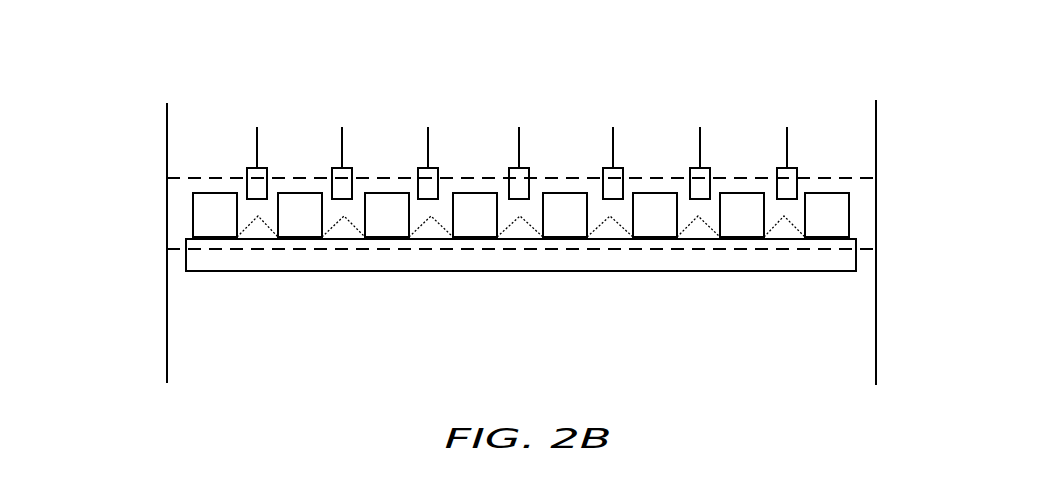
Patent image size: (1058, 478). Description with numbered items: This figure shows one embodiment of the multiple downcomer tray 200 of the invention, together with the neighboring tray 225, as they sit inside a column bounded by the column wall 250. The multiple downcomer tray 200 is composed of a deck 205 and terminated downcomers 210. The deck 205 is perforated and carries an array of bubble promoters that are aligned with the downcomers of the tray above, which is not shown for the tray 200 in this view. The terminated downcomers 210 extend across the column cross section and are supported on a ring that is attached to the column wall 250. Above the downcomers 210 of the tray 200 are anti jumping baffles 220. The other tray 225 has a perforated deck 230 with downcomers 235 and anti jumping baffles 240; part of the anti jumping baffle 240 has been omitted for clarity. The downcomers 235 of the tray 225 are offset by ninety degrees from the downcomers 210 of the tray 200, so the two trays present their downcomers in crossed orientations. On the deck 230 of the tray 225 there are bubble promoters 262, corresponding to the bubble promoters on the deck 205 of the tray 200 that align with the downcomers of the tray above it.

The multiple downcomer tray 200 is at (132, 158).
The deck 205 is at (180, 178).
The terminated downcomers 210 is at (264, 177).
The anti jumping baffles 220 is at (787, 177).
The tray 225 is at (146, 236).
The perforated deck 230 is at (173, 250).
The downcomers 235 is at (418, 243).
The anti jumping baffles 240 is at (484, 232).
The column wall 250 is at (876, 133).
The bubble promoters 262 is at (338, 226).